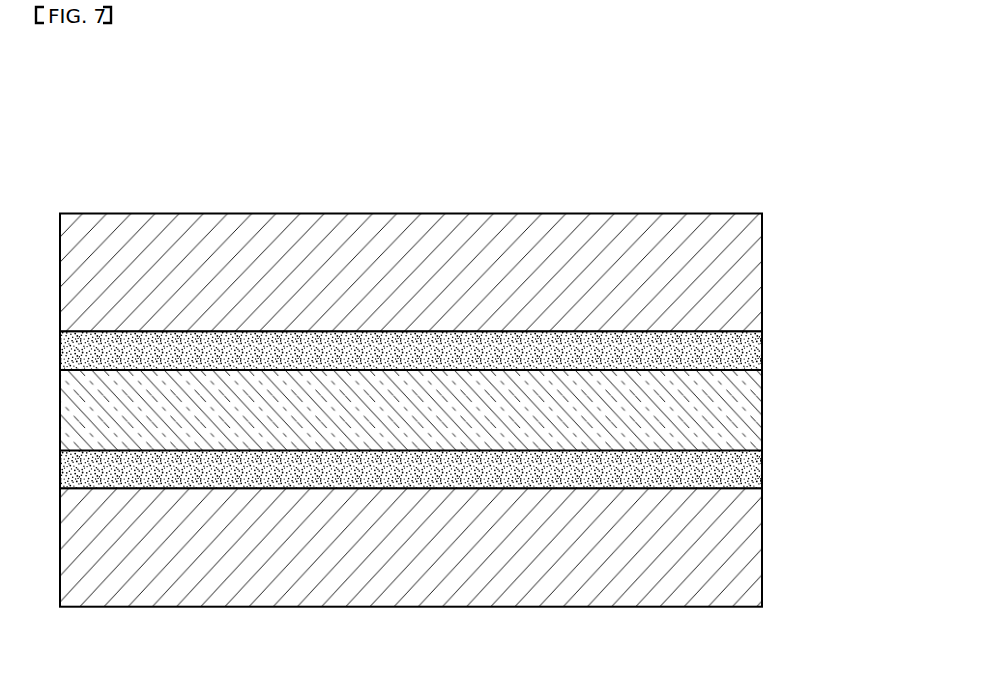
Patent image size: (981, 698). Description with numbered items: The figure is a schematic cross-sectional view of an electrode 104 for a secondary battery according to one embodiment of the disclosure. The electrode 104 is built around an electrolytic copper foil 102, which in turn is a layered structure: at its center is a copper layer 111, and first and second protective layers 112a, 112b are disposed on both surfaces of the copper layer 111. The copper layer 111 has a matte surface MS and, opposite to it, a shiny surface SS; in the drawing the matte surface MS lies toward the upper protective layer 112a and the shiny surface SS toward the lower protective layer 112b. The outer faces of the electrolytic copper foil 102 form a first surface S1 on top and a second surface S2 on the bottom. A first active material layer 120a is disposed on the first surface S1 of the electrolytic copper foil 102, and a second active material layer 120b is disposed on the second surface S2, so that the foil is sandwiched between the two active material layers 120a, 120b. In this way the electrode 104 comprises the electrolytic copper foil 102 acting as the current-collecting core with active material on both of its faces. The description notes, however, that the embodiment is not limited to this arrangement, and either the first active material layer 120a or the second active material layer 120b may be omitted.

The electrode for a secondary battery 104 is at (109, 127).
The electrolytic copper foil 102 is at (486, 409).
The copper layer 111 is at (745, 410).
The first protective layer 112a is at (745, 352).
The second protective layer 112b is at (458, 470).
The first active material layer 120a is at (752, 268).
The second active material layer 120b is at (752, 543).
The matte surface MS is at (287, 370).
The shiny surface SS is at (286, 451).
The first surface S1 is at (452, 331).
The second surface S2 is at (452, 489).